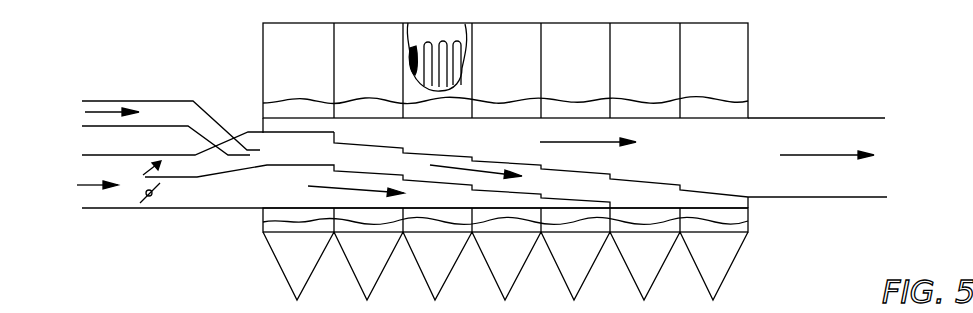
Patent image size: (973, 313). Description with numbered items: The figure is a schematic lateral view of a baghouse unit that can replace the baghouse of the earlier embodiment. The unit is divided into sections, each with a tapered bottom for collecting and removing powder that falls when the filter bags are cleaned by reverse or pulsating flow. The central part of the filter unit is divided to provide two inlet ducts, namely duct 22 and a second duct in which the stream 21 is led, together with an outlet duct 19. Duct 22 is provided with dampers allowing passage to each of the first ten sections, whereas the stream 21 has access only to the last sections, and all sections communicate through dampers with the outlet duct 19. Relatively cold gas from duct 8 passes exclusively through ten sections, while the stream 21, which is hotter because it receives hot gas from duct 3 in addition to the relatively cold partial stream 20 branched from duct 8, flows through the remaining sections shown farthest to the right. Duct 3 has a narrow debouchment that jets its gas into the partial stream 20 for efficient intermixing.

The duct 3 is at (208, 128).
The duct 8 is at (106, 186).
The outlet duct 19 is at (825, 186).
The partial stream 20 is at (376, 183).
The stream 21 is at (513, 164).
The duct 22 is at (165, 198).